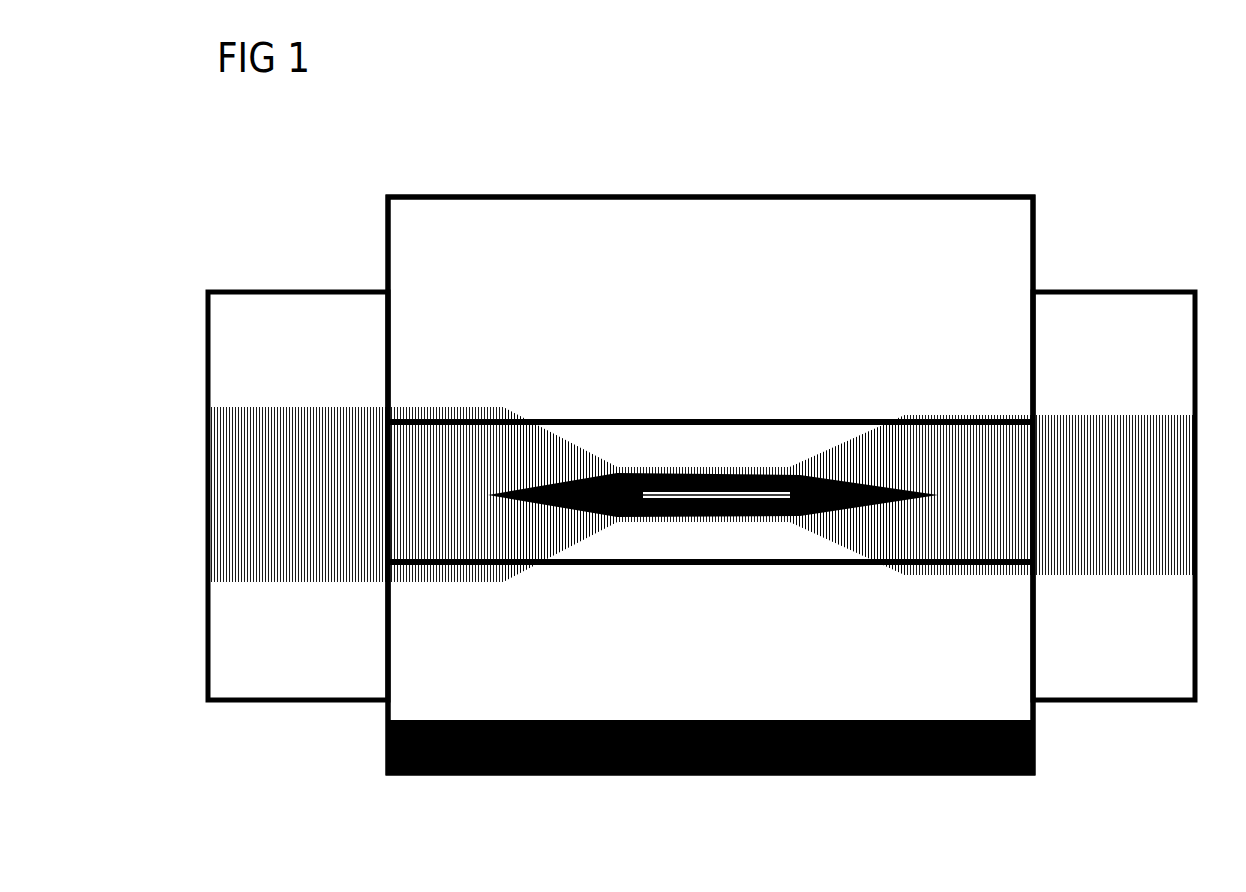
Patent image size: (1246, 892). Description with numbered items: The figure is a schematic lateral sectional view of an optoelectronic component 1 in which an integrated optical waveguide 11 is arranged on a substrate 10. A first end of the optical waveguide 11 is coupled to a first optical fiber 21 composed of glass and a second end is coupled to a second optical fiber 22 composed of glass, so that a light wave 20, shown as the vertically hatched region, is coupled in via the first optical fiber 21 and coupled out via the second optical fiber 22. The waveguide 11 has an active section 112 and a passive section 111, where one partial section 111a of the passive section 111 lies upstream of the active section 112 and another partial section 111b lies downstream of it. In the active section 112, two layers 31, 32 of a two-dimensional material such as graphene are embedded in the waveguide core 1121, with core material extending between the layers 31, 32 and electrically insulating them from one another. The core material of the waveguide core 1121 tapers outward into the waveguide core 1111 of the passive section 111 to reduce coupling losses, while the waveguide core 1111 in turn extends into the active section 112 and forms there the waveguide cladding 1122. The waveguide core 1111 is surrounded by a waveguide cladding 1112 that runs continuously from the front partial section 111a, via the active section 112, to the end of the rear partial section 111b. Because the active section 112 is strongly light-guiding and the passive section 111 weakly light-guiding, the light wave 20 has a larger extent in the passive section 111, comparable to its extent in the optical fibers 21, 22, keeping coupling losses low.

The optoelectronic component 1 is at (1060, 115).
The substrate 10 is at (789, 775).
The optical waveguide 11 is at (729, 215).
The passive section 111 is at (462, 583).
The partial section of the passive section 111a is at (448, 405).
The partial section of the passive section 111b is at (907, 402).
The waveguide core of the passive section 1111 is at (476, 457).
The waveguide cladding 1112 is at (487, 230).
The active section 112 is at (713, 507).
The waveguide core of the active section 1121 is at (731, 477).
The waveguide cladding of the active section 1122 is at (645, 440).
The light wave 20 is at (296, 430).
The first optical fiber 21 is at (275, 680).
The second optical fiber 22 is at (1107, 680).
The layer 31 is at (703, 477).
The layer 32 is at (722, 512).